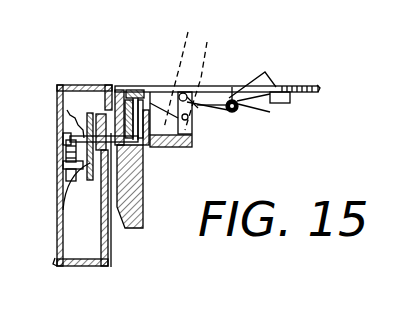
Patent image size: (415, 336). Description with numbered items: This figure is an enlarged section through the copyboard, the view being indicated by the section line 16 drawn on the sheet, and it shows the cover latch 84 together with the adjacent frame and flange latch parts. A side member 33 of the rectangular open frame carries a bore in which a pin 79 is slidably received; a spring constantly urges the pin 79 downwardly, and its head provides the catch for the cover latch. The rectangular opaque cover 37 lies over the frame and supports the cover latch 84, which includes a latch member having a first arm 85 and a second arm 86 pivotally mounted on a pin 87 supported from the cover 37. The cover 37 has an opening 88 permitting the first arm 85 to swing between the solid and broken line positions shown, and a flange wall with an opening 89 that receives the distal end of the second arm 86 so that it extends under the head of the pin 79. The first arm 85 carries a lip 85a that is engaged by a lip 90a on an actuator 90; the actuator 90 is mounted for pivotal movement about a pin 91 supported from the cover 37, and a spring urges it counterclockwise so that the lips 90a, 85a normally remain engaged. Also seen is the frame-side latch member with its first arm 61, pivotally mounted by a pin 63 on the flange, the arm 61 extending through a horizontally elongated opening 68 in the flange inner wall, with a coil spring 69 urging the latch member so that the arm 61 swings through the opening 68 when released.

The section line 16- 16 is at (150, 53).
The side member 33 is at (128, 210).
The opaque cover 37 is at (307, 85).
The first arm 61 is at (64, 106).
The pin 63 is at (67, 178).
The horizontally elongated opening 68 is at (63, 210).
The coil spring 69 is at (66, 148).
The pin 79 is at (108, 102).
The cover latch 84 is at (236, 50).
The first arm 85 is at (194, 40).
The lip 85a is at (240, 86).
The second arm 86 is at (168, 95).
The pin 87 is at (188, 120).
The opening 88 is at (232, 85).
The opening 89 is at (162, 147).
The actuator 90 is at (279, 87).
The lip 90a is at (270, 112).
The pin 91 is at (237, 110).